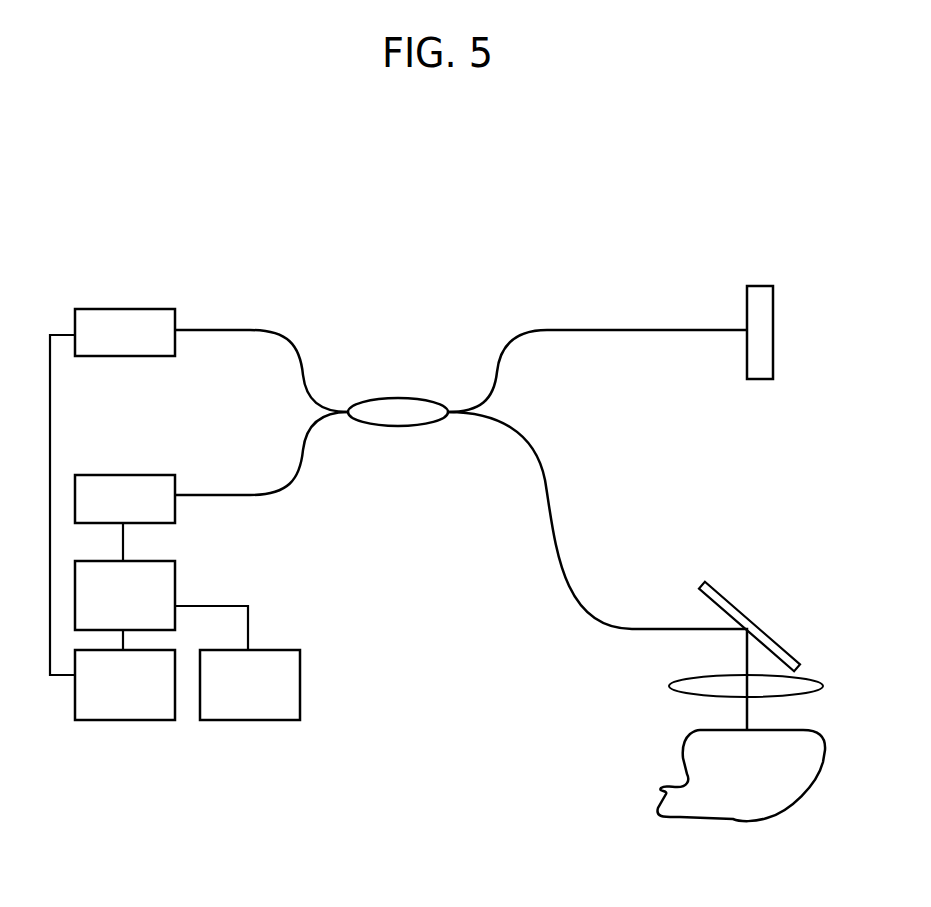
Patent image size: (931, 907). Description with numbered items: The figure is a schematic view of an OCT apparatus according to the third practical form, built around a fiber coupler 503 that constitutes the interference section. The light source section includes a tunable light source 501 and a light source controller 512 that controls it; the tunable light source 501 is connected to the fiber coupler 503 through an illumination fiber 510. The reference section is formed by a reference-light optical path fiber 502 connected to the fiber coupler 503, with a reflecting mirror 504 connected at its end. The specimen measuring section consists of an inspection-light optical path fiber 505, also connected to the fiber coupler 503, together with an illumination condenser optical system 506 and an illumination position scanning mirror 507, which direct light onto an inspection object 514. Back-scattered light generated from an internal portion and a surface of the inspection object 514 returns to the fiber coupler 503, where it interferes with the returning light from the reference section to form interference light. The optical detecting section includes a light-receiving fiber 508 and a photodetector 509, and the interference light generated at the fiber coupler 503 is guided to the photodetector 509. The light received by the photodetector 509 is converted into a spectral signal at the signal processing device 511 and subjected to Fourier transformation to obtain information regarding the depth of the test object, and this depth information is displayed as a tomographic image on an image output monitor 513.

The tunable light source 501 is at (137, 309).
The reference-light optical path fiber 502 is at (626, 330).
The fiber coupler 503 is at (400, 398).
The reflecting mirror 504 is at (760, 286).
The inspection-light optical path fiber 505 is at (550, 530).
The illumination condenser optical system 506 is at (668, 688).
The illumination position scanning mirror 507 is at (730, 600).
The light-receiving fiber 508 is at (210, 494).
The photodetector 509 is at (117, 475).
The illumination fiber 510 is at (212, 329).
The signal processing device 511 is at (176, 578).
The light source controller 512 is at (130, 721).
The image output monitor 513 is at (248, 721).
The inspection object 514 is at (683, 750).